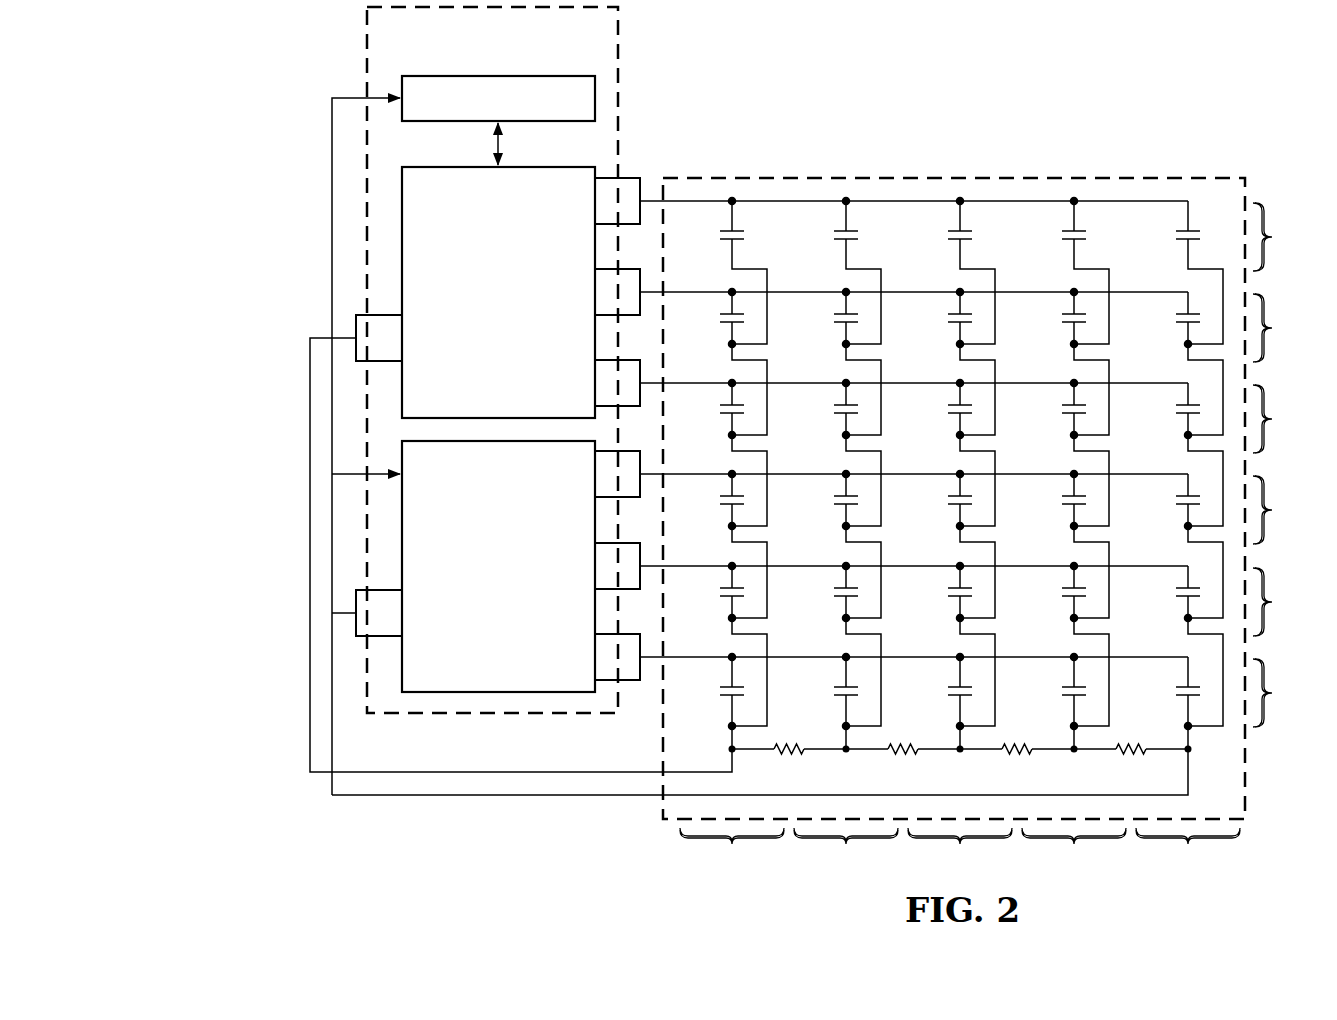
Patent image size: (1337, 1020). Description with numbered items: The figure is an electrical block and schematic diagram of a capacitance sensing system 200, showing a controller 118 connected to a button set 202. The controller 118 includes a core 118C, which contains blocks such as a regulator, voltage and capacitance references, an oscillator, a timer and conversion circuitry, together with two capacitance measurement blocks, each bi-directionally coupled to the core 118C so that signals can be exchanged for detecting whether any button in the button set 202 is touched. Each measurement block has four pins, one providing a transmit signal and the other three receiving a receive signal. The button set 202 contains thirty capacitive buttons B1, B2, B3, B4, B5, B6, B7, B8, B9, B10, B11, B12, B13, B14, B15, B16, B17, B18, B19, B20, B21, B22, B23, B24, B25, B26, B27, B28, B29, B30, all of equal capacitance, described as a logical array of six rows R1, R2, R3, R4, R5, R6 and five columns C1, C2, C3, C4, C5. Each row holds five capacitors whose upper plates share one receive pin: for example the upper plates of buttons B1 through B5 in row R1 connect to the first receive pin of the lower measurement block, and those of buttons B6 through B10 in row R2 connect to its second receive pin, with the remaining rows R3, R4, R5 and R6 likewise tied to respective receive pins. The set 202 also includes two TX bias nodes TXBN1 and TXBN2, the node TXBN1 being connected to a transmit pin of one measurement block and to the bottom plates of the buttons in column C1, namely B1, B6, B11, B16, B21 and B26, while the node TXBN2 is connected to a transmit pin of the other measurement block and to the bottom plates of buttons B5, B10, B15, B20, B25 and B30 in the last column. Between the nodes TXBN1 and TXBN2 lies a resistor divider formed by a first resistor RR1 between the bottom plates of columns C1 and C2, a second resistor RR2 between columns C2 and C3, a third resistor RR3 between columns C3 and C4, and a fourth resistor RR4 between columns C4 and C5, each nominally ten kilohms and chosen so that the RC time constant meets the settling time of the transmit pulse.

The capacitance sensing system 200 is at (248, 82).
The controller 118 is at (362, 59).
The core 118C is at (486, 75).
The button set 202 is at (1052, 176).
The TX bias node TXBN1 is at (447, 776).
The TX bias node TXBN2 is at (549, 799).
The first resistor RR1 is at (789, 764).
The second resistor RR2 is at (903, 764).
The third resistor RR3 is at (1017, 764).
The fourth resistor RR4 is at (1131, 764).
The row R1 is at (1280, 693).
The row R2 is at (1280, 602).
The row R3 is at (1280, 510).
The row R4 is at (1280, 419).
The row R5 is at (1280, 328).
The row R6 is at (1280, 237).
The column C1 is at (732, 850).
The column C2 is at (846, 850).
The column C3 is at (960, 850).
The column C4 is at (1074, 850).
The column C5 is at (1188, 850).
The capacitive button B1 is at (715, 702).
The capacitive button B2 is at (829, 702).
The capacitive button B3 is at (943, 702).
The capacitive button B4 is at (1057, 702).
The capacitive button B5 is at (1171, 703).
The capacitive button B6 is at (726, 645).
The capacitive button B7 is at (840, 645).
The capacitive button B8 is at (954, 645).
The capacitive button B9 is at (1068, 645).
The capacitive button B10 is at (1176, 646).
The capacitive button B11 is at (720, 545).
The capacitive button B12 is at (834, 545).
The capacitive button B13 is at (948, 545).
The capacitive button B14 is at (1062, 545).
The capacitive button B15 is at (1176, 546).
The capacitive button B16 is at (720, 453).
The capacitive button B17 is at (834, 453).
The capacitive button B18 is at (948, 453).
The capacitive button B19 is at (1062, 453).
The capacitive button B20 is at (1176, 454).
The capacitive button B21 is at (720, 362).
The capacitive button B22 is at (834, 362).
The capacitive button B23 is at (948, 362).
The capacitive button B24 is at (1062, 362).
The capacitive button B25 is at (1176, 363).
The capacitive button B26 is at (720, 271).
The capacitive button B27 is at (834, 271).
The capacitive button B28 is at (948, 271).
The capacitive button B29 is at (1062, 271).
The capacitive button B30 is at (1176, 272).